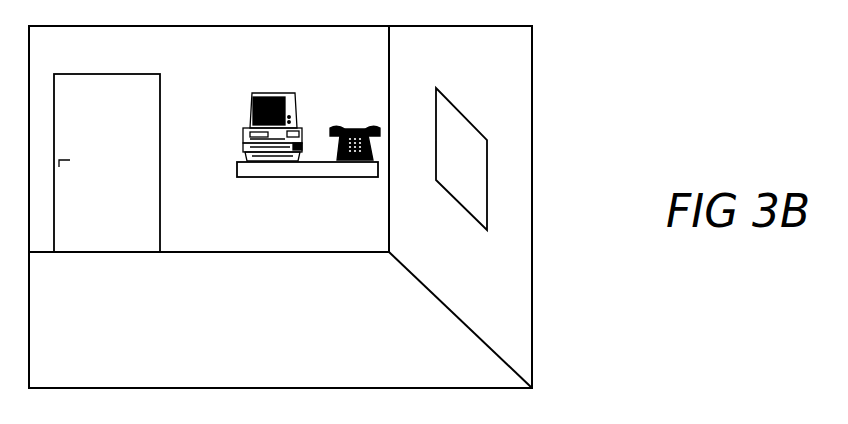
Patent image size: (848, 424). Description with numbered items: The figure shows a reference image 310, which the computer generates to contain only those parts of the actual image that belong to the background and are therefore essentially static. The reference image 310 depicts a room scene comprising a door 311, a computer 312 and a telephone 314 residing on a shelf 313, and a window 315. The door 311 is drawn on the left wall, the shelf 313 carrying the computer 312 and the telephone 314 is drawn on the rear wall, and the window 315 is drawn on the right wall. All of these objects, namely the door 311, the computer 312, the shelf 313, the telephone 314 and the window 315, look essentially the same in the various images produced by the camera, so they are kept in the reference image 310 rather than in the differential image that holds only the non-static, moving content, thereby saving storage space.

The reference image 310 is at (515, 59).
The door 311 is at (105, 239).
The computer 312 is at (235, 128).
The shelf 313 is at (280, 170).
The telephone 314 is at (337, 170).
The window 315 is at (465, 188).